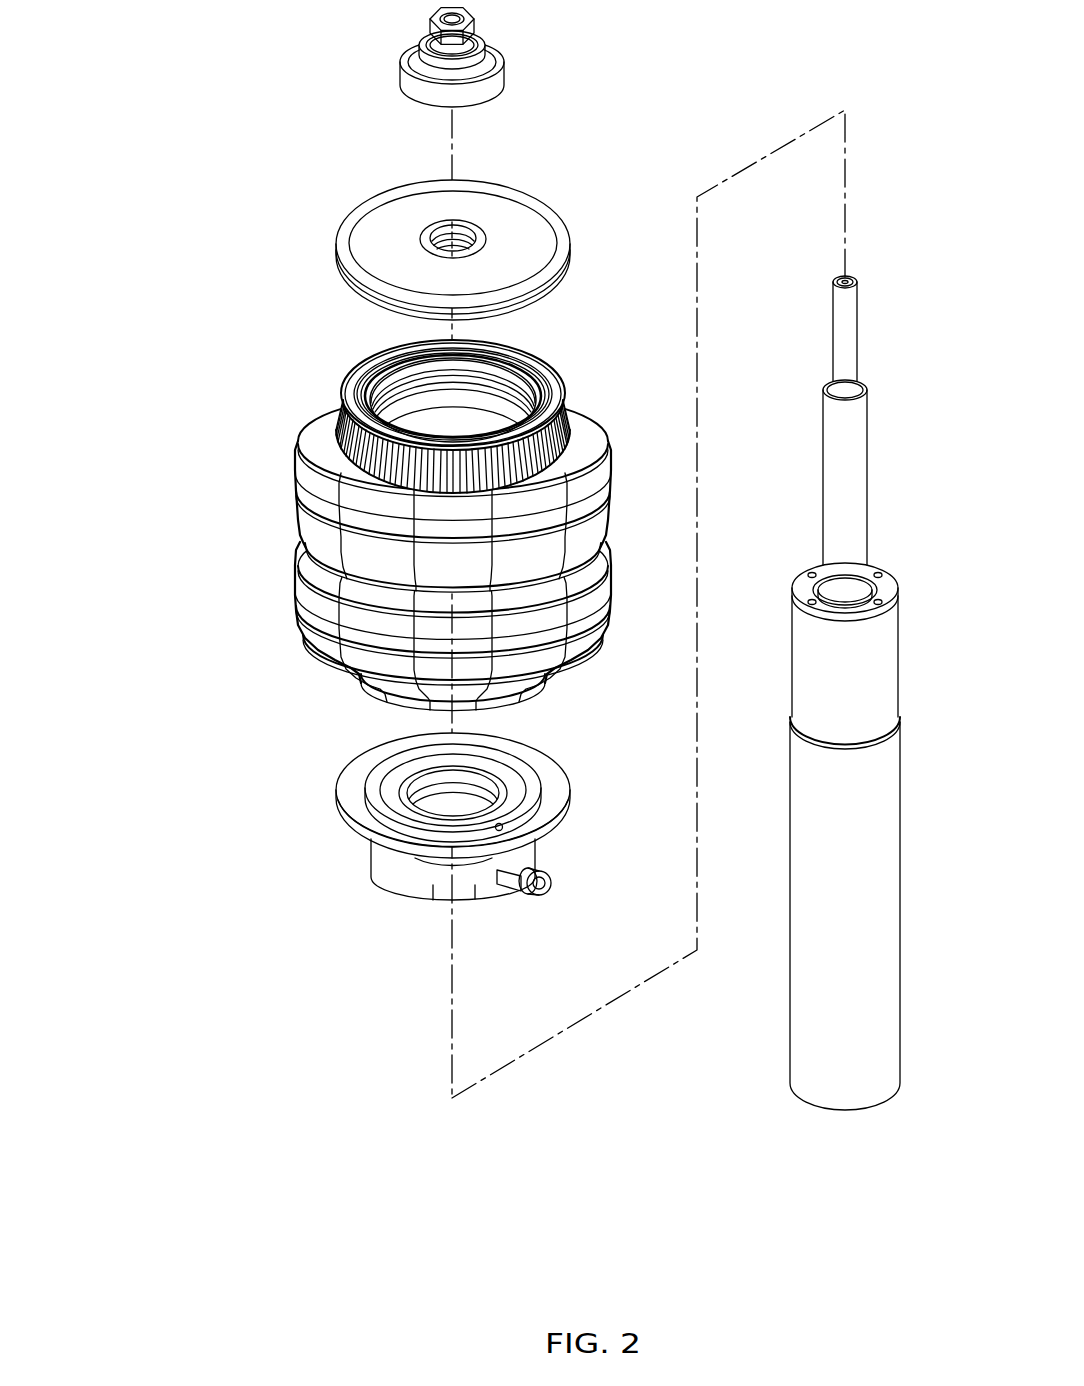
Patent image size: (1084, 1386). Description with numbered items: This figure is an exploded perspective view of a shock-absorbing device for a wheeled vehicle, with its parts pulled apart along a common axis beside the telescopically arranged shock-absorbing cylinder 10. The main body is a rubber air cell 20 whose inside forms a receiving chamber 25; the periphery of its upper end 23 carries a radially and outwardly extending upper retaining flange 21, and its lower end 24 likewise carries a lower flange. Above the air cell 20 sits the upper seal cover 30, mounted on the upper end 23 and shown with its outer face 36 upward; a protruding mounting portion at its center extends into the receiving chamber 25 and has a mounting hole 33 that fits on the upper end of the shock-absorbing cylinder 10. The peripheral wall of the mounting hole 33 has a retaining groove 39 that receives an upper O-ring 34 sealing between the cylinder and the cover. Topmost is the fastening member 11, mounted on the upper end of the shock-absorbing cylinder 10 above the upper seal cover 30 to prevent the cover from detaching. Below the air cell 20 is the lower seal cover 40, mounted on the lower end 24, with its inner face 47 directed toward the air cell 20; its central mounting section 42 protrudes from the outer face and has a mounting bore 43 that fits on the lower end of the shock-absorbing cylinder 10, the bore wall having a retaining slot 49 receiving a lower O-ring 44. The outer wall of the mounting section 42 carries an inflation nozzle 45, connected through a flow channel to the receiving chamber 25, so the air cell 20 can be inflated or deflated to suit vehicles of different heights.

The shock-absorbing cylinder 10 is at (772, 1036).
The fastening member 11 is at (411, 54).
The air cell 20 is at (342, 500).
The upper retaining flange 21 is at (343, 394).
The upper end 23 is at (297, 440).
The lower end 24 is at (345, 676).
The receiving chamber 25 is at (364, 360).
The upper seal cover 30 is at (411, 206).
The mounting hole 33 is at (467, 232).
The upper O-ring 34 is at (551, 257).
The retaining groove 39 is at (482, 239).
The outer face 36 is at (384, 214).
The lower seal cover 40 is at (397, 853).
The mounting section 42 is at (400, 885).
The mounting bore 43 is at (503, 785).
The lower O-ring 44 is at (524, 919).
The retaining slot 49 is at (434, 857).
The inflation nozzle 45 is at (546, 871).
The inner face 47 is at (368, 838).